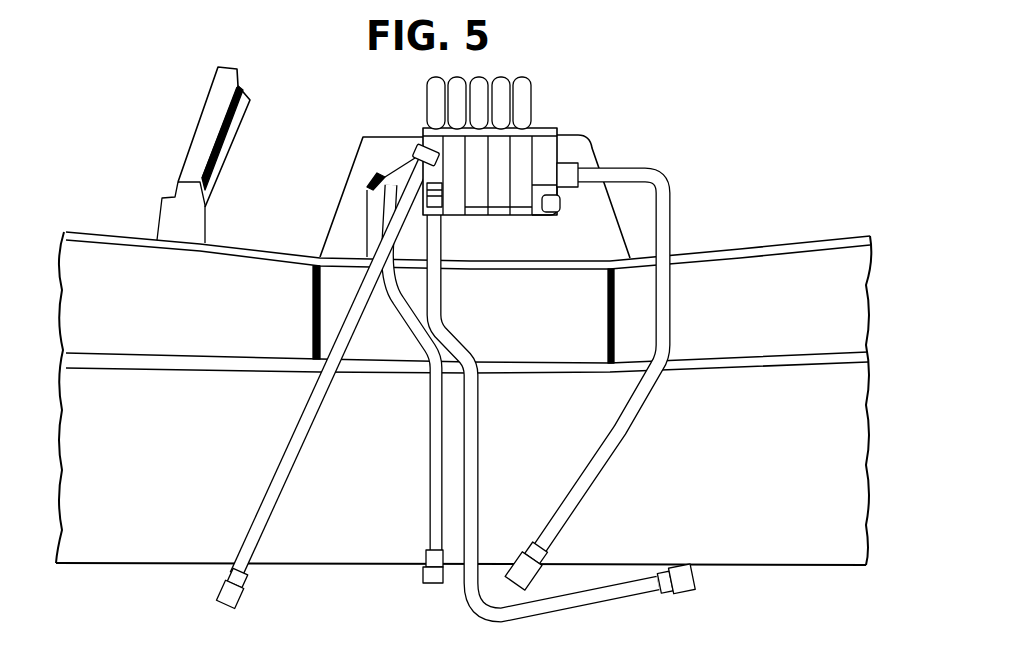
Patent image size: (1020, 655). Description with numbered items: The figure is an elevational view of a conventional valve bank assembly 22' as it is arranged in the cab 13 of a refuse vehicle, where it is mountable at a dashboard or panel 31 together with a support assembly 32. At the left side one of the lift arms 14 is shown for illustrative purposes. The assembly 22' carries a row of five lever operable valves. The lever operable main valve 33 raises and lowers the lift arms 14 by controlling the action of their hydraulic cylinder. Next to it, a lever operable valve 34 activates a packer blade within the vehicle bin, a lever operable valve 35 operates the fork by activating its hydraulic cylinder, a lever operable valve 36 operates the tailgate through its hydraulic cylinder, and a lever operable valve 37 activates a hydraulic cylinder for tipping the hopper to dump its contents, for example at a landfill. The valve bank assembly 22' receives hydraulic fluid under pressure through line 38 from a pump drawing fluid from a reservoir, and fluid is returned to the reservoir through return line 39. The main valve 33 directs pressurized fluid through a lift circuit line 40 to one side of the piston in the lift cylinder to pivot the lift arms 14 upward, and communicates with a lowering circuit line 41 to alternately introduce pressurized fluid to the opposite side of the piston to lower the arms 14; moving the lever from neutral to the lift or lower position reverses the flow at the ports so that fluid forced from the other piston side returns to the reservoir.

The cab 13 is at (763, 565).
The lift arm 14 is at (192, 148).
The valve bank assembly 22' is at (621, 97).
The dashboard or panel 31 is at (707, 268).
The support assembly 32 is at (600, 157).
The lever operable main valve 33 is at (422, 128).
The lever operable valve 34 is at (455, 210).
The lever operable valve 35 is at (480, 212).
The lever operable valve 36 is at (500, 217).
The lever operable valve 37 is at (533, 203).
The line 38 is at (430, 512).
The return line 39 is at (627, 425).
The lift circuit line 40 is at (258, 520).
The lowering circuit line 41 is at (475, 473).